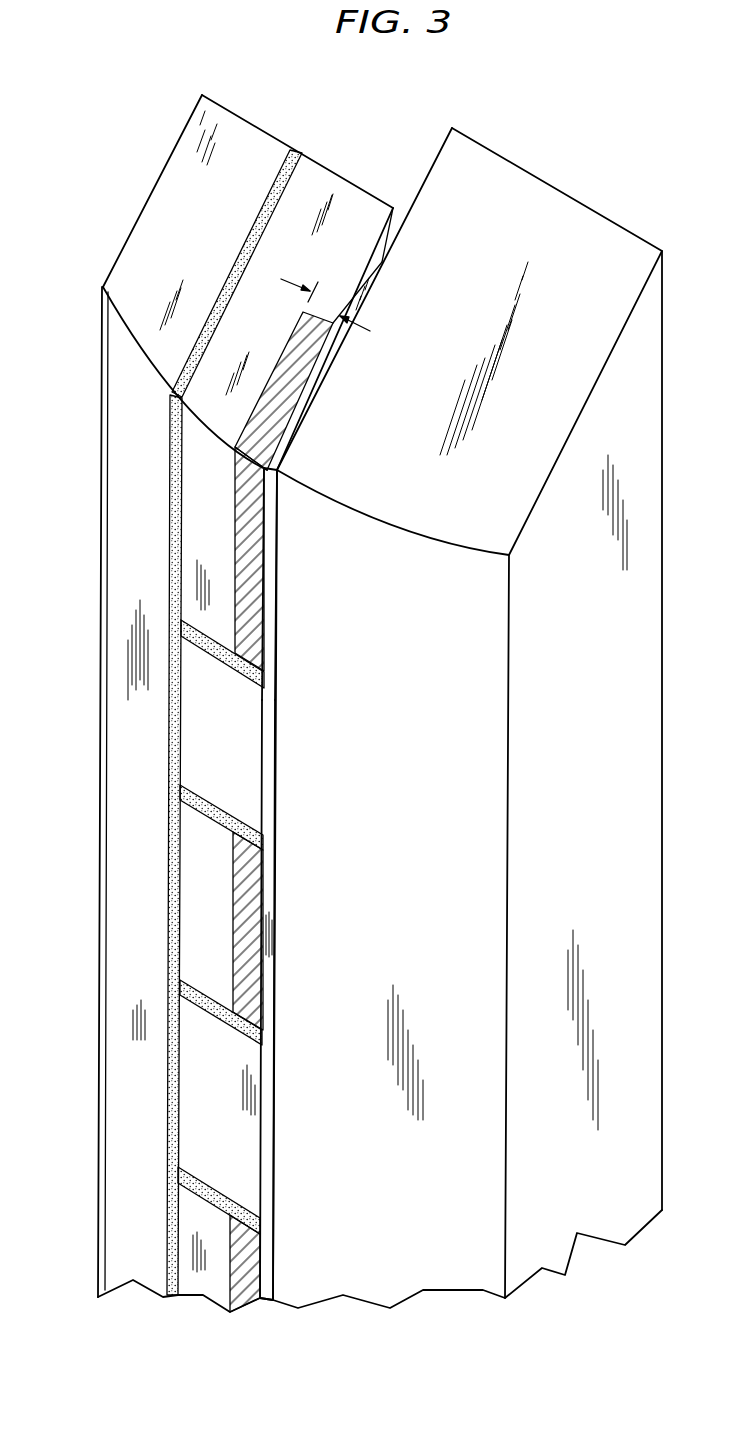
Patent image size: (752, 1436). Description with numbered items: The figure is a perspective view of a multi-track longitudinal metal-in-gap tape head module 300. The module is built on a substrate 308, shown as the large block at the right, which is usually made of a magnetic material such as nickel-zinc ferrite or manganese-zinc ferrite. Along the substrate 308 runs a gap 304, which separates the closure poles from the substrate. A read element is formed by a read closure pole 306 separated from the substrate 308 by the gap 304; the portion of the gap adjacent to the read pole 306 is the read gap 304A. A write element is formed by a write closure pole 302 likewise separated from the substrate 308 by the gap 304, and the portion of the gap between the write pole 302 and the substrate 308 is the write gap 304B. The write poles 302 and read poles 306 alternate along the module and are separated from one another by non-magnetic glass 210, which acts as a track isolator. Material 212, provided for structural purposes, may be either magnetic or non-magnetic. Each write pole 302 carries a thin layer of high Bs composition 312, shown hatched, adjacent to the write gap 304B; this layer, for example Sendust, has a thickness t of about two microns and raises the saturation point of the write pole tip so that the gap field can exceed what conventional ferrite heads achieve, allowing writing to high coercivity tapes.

The multi-track longitudinal metal-in-gap tape head module 300 is at (171, 1314).
The non-magnetic glass 210 is at (171, 497).
The material 212 is at (209, 253).
The write closure pole 302 is at (223, 531).
The gap 304 is at (291, 433).
The read gap 304A is at (278, 815).
The write gap 304B is at (278, 593).
The read closure pole 306 is at (223, 745).
The substrate 308 is at (438, 680).
The high Bs composition 312 is at (281, 373).